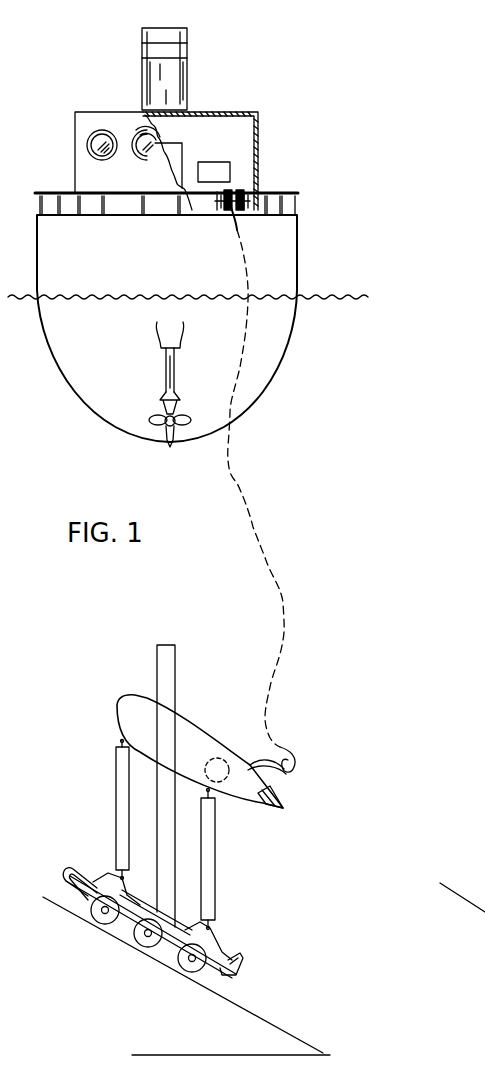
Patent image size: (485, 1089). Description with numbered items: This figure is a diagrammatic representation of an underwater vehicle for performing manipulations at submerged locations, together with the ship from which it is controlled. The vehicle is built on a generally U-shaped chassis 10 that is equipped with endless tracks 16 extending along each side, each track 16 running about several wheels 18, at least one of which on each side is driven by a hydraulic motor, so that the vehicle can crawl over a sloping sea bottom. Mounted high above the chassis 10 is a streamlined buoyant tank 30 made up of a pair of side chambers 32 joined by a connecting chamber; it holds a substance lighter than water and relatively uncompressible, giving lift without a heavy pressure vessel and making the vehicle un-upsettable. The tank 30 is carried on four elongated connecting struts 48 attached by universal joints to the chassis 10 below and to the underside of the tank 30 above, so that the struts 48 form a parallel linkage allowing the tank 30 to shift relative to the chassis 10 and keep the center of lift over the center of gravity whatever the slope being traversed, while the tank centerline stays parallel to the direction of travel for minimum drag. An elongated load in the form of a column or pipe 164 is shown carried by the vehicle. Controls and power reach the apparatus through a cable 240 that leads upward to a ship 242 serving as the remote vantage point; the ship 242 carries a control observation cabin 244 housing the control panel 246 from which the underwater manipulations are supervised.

The chassis 10 is at (142, 918).
The endless tracks 16 is at (213, 975).
The wheels 18 is at (185, 967).
The buoyant tank 30 is at (246, 747).
The side chambers 32 is at (188, 742).
The connecting struts 48 is at (122, 822).
The column or pipe 164 is at (163, 670).
The cable 240 is at (263, 543).
The ship 242 is at (298, 260).
The control observation cabin 244 is at (258, 141).
The control panel 246 is at (213, 170).